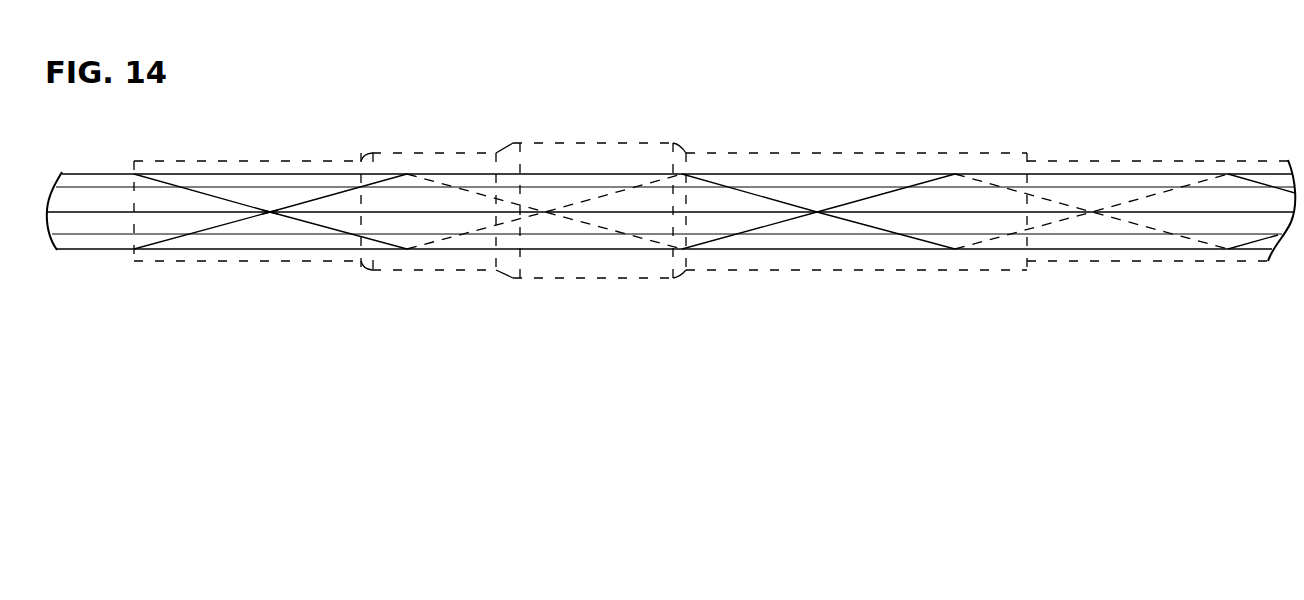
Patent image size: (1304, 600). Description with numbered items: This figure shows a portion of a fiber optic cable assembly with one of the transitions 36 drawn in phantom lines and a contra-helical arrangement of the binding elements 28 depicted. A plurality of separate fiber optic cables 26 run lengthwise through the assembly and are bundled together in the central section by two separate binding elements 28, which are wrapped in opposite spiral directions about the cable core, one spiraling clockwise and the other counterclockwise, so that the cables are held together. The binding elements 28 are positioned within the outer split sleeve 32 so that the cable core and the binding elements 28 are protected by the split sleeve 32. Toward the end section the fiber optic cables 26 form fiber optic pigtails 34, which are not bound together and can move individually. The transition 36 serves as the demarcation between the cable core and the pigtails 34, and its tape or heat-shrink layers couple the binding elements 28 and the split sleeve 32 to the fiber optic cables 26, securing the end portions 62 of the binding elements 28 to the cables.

The fiber optic cables 26 is at (1072, 250).
The binding elements 28 is at (236, 201).
The split sleeve 32 is at (1087, 160).
The fiber optic pigtails 34 is at (98, 250).
The transition 36 is at (571, 143).
The end portions 62 is at (273, 205).